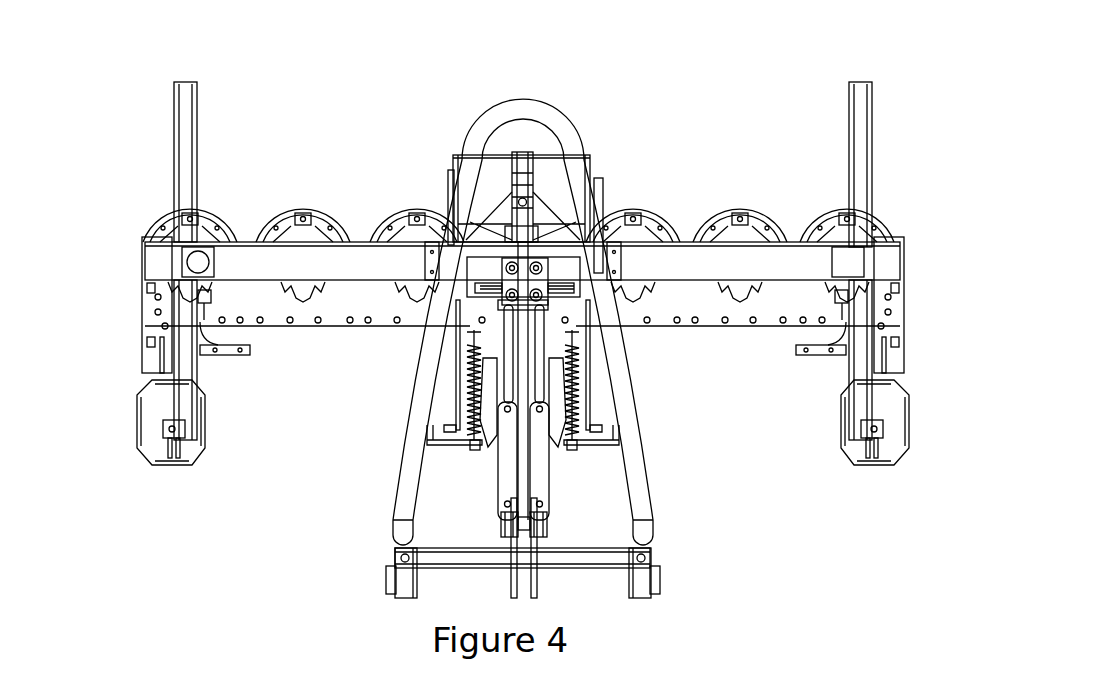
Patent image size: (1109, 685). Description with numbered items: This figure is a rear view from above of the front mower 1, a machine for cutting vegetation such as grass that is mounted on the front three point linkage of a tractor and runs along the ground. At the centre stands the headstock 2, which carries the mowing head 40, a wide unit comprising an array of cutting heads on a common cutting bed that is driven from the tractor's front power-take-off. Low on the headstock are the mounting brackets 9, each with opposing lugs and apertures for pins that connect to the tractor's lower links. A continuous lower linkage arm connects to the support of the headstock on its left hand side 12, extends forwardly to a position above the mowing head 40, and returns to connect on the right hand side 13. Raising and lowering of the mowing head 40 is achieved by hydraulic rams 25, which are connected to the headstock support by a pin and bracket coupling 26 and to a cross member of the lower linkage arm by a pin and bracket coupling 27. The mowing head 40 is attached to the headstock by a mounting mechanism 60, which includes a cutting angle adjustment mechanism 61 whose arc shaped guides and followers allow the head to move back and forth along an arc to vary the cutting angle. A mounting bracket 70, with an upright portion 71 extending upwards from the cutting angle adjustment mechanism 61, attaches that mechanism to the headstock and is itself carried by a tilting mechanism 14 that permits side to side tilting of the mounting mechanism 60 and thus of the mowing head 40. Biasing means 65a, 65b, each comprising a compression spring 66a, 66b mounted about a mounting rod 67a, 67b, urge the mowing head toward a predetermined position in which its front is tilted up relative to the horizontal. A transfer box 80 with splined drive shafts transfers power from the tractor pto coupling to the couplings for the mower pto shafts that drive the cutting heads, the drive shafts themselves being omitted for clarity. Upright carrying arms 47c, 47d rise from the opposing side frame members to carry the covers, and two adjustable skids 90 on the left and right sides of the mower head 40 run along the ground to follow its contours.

The front mower 1 is at (306, 56).
The headstock 2 is at (298, 474).
The mounting brackets 9 is at (388, 580).
The left hand side 12 is at (348, 552).
The right hand side 13 is at (676, 543).
The tilting mechanism 14 is at (606, 461).
The hydraulic rams 25 is at (503, 481).
The pin and bracket coupling 26 is at (505, 522).
The pin and bracket coupling 27 is at (478, 328).
The mowing head 40 is at (733, 161).
The carrying arm 47c is at (174, 152).
The carrying arm 47d is at (863, 135).
The mounting mechanism 60 is at (606, 150).
The cutting angle adjustment mechanism 61 is at (423, 262).
The biasing means 65a is at (466, 400).
The biasing means 65b is at (580, 398).
The compression spring 66a is at (460, 432).
The compression spring 66b is at (572, 416).
The mounting rod 67a is at (472, 348).
The mounting rod 67b is at (573, 340).
The mounting bracket 70 is at (497, 197).
The upright portion 71 is at (527, 192).
The transfer box 80 is at (540, 282).
The adjustable skids 90 is at (137, 421).